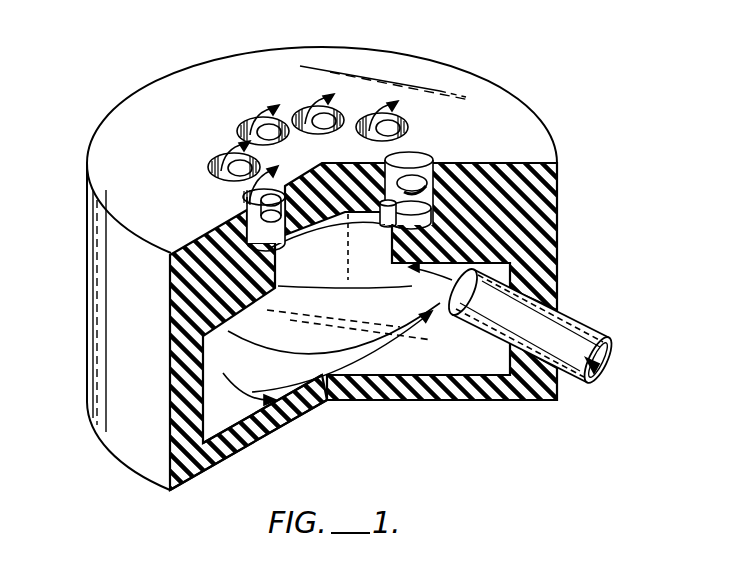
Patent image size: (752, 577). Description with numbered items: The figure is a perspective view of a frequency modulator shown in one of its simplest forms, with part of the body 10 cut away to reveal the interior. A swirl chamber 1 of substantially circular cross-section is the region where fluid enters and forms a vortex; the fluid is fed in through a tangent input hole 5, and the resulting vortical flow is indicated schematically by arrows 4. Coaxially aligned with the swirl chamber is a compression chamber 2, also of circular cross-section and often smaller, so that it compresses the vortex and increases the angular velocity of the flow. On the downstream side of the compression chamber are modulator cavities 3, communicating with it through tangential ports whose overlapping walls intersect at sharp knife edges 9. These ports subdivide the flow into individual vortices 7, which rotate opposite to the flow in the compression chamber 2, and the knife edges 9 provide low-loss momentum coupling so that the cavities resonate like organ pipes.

The swirl chamber 1 is at (232, 410).
The compression chamber 2 is at (288, 273).
The modulator cavities 3 is at (412, 182).
The arrows 4 is at (512, 306).
The tangent input hole 5 is at (592, 329).
The individual vortices 7 is at (252, 190).
The knife edges 9 is at (386, 210).
The housing 10 is at (120, 306).